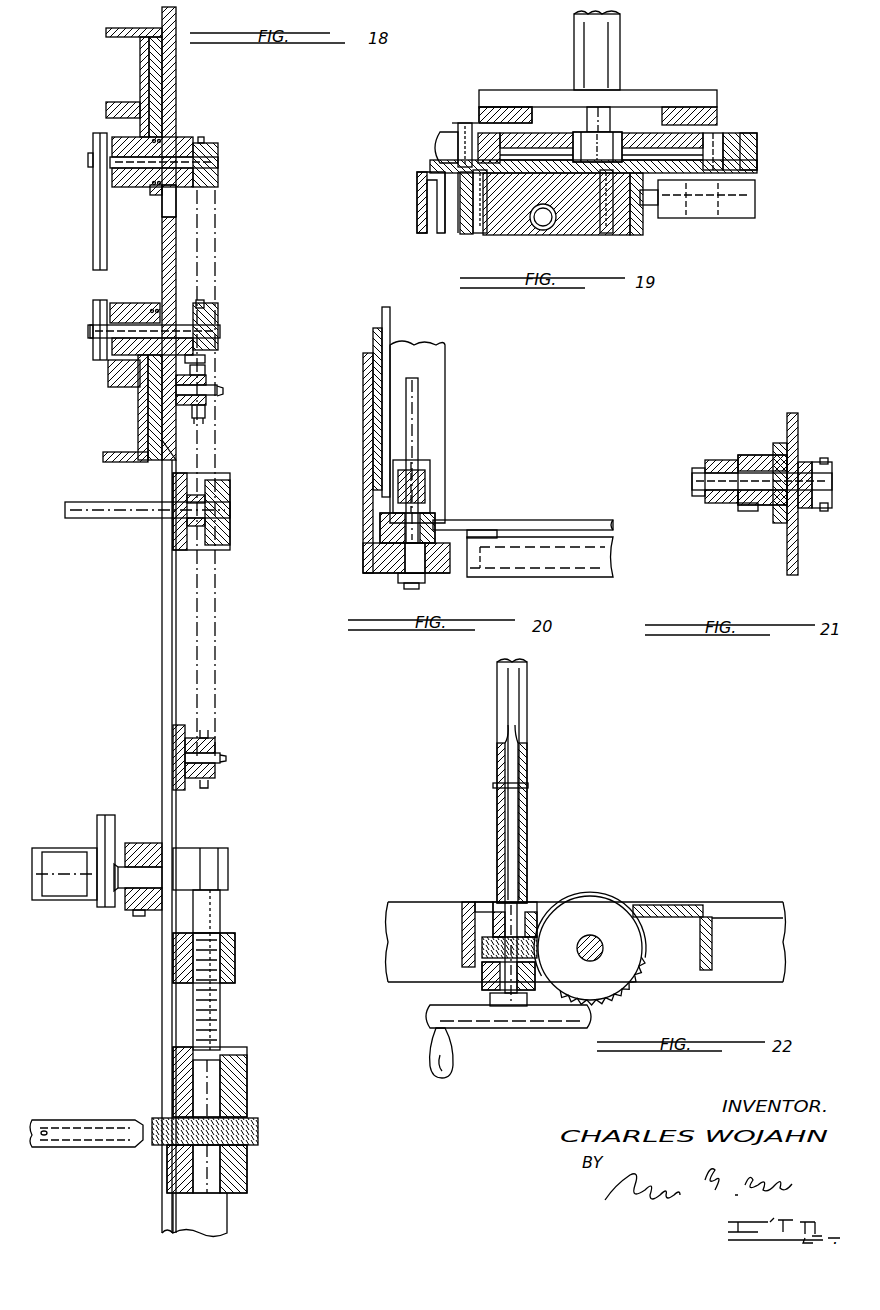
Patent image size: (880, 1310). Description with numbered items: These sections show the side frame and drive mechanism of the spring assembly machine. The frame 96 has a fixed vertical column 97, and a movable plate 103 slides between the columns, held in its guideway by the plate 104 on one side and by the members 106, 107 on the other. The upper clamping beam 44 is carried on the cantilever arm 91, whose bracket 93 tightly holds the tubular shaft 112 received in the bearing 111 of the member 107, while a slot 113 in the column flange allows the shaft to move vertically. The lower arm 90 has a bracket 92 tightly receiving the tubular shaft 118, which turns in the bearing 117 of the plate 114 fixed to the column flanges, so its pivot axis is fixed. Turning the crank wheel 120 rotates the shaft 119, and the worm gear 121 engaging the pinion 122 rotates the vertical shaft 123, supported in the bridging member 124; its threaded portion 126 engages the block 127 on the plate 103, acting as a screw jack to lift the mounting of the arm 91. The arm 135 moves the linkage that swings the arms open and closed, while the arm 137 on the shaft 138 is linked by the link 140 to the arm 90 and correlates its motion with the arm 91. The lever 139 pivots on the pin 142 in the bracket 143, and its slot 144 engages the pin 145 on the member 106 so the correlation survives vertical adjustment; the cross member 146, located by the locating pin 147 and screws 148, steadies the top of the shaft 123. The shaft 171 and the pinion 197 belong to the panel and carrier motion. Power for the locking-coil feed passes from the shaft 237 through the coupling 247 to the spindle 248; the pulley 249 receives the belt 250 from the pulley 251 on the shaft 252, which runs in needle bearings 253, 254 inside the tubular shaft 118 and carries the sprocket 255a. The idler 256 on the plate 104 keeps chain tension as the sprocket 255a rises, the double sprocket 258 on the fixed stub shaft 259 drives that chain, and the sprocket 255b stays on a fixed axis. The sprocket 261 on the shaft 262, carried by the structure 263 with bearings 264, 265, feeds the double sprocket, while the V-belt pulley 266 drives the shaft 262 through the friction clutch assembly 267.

In FIG. 20, the clamping beam 44 is at (363, 428).
In FIG. 18, the cantilever arm 90 is at (140, 438).
In FIG. 20, the cantilever arm 90 is at (590, 548).
In FIG. 18, the cantilever arm 91 is at (140, 55).
In FIG. 18, the bracket 92 is at (110, 374).
In FIG. 18, the bracket 93 is at (108, 115).
In FIG. 18, the frame 96 is at (186, 79).
In FIG. 18, the vertical column 97 is at (170, 468).
In FIG. 21, the vertical column 97 is at (787, 555).
In FIG. 19, the movable plate 103 is at (540, 172).
In FIG. 18, the plate 104 is at (175, 740).
In FIG. 18, the member 106 is at (155, 843).
In FIG. 19, the member 106 is at (432, 165).
In FIG. 18, the member 107 is at (155, 110).
In FIG. 18, the bearing 111 is at (162, 140).
In FIG. 18, the tubular shaft 112 is at (190, 175).
In FIG. 18, the slot 113 is at (170, 212).
In FIG. 18, the plate 114 is at (165, 452).
In FIG. 18, the bearing 117 is at (165, 300).
In FIG. 18, the tubular shaft 118 is at (205, 306).
In FIG. 18, the shaft 119 is at (80, 1118).
In FIG. 22, the shaft 119 is at (528, 824).
In FIG. 22, the crank wheel 120 is at (455, 1063).
In FIG. 22, the worm gear 121 is at (520, 930).
In FIG. 18, the pinion 122 is at (258, 1130).
In FIG. 22, the pinion 122 is at (604, 915).
In FIG. 18, the vertical shaft 123 is at (228, 1024).
In FIG. 19, the vertical shaft 123 is at (546, 222).
In FIG. 22, the vertical shaft 123 is at (603, 947).
In FIG. 18, the bridging member 124 is at (247, 1088).
In FIG. 18, the threaded portion 126 is at (220, 908).
In FIG. 18, the block 127 is at (235, 948).
In FIG. 18, the arm 135 is at (247, 1174).
In FIG. 18, the arm 137 is at (88, 905).
In FIG. 19, the arm 137 is at (652, 90).
In FIG. 19, the shaft 138 is at (612, 17).
In FIG. 19, the lever 139 is at (757, 145).
In FIG. 18, the link 140 is at (98, 818).
In FIG. 19, the link 140 is at (480, 110).
In FIG. 19, the pin 142 is at (725, 133).
In FIG. 19, the bracket 143 is at (748, 207).
In FIG. 18, the slot 144 is at (140, 916).
In FIG. 19, the slot 144 is at (458, 132).
In FIG. 19, the pin 145 is at (445, 150).
In FIG. 18, the cross member 146 is at (228, 870).
In FIG. 19, the cross member 146 is at (460, 232).
In FIG. 19, the locating pin 147 is at (446, 198).
In FIG. 19, the screw 148 is at (478, 233).
In FIG. 18, the shaft 171 is at (108, 518).
In FIG. 18, the pinion 197 is at (230, 538).
In FIG. 20, the shaft 237 is at (420, 420).
In FIG. 20, the coupling 247 is at (432, 480).
In FIG. 20, the spindle 248 is at (405, 562).
In FIG. 20, the pulley 249 is at (425, 520).
In FIG. 18, the belt 250 is at (93, 230).
In FIG. 20, the belt 250 is at (545, 522).
In FIG. 18, the pulley 251 is at (92, 318).
In FIG. 18, the shaft 252 is at (218, 340).
In FIG. 18, the needle bearing unit 253 is at (130, 305).
In FIG. 18, the needle bearing unit 254 is at (187, 356).
In FIG. 18, the sprocket 255a is at (218, 154).
In FIG. 18, the sprocket 255b is at (215, 312).
In FIG. 18, the idler sprocket 256 is at (208, 736).
In FIG. 18, the double sprocket 258 is at (206, 415).
In FIG. 18, the stub shaft 259 is at (223, 391).
In FIG. 21, the sprocket 261 is at (822, 462).
In FIG. 21, the shaft 262 is at (828, 490).
In FIG. 21, the structure 263 is at (755, 455).
In FIG. 21, the bearing 264 is at (745, 512).
In FIG. 21, the bearing 265 is at (805, 462).
In FIG. 21, the V-belt pulley 266 is at (718, 457).
In FIG. 21, the friction clutch assembly 267 is at (698, 497).